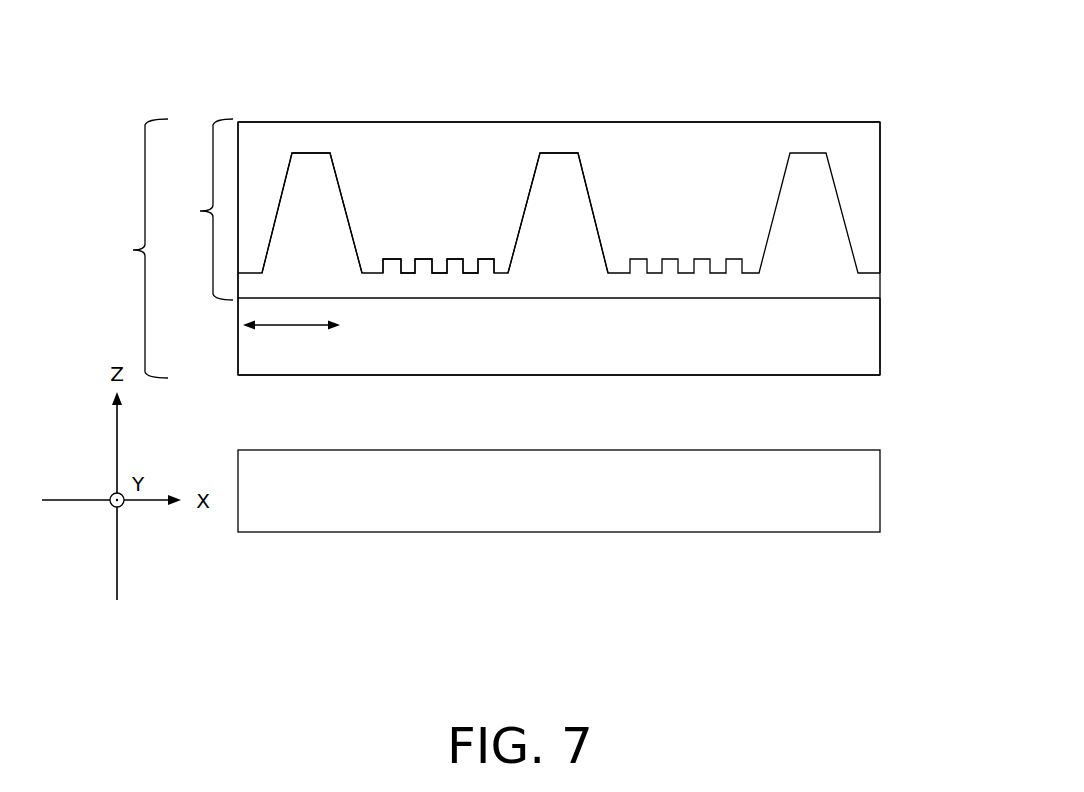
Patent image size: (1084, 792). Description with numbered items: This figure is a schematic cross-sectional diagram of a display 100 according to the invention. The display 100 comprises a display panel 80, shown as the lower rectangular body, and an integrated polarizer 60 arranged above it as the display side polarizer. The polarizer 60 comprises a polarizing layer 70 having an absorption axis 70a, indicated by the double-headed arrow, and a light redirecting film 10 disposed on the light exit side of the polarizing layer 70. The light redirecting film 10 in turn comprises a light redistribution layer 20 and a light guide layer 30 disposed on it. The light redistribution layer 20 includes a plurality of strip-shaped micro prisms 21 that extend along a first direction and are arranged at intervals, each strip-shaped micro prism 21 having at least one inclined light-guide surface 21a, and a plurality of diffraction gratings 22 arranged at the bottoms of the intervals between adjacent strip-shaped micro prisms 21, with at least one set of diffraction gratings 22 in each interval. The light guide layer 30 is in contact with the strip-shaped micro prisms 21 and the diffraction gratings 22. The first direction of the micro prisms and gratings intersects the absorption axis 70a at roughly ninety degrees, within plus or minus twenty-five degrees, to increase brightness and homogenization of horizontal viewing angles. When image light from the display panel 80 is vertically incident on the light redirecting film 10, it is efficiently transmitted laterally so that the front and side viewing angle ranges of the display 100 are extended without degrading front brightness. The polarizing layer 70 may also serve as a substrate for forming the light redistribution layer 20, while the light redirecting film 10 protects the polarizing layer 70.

The display 100 is at (195, 32).
The light redirecting film 10 is at (200, 211).
The light redistribution layer 20 is at (865, 286).
The strip-shaped micro prism 21 is at (315, 178).
The inclined light-guide surface 21a is at (593, 210).
The diffraction grating 22 is at (425, 266).
The light guide layer 30 is at (865, 151).
The polarizer 60 is at (133, 250).
The polarizing layer 70 is at (865, 348).
The absorption axis 70a is at (291, 338).
The display panel 80 is at (865, 488).